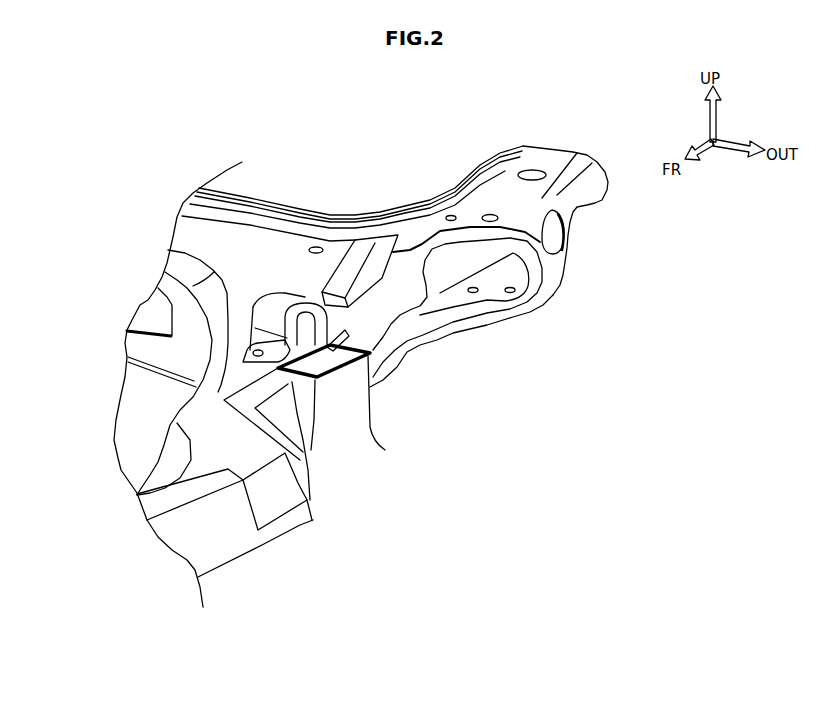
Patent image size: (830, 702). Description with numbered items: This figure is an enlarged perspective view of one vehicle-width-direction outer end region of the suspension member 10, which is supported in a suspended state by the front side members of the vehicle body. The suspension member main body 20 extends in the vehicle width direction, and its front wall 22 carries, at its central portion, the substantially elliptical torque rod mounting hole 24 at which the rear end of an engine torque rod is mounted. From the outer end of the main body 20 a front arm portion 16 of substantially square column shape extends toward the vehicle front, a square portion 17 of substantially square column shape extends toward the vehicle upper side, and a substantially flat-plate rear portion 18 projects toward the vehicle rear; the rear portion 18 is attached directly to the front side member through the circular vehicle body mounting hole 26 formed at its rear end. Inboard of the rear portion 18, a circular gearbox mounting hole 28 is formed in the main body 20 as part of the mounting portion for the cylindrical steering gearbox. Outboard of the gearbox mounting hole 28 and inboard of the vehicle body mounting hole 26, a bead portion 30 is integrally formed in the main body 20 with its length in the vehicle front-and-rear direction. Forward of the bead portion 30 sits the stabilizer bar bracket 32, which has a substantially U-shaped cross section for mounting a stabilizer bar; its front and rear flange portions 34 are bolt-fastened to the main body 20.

The suspension member 10 is at (366, 181).
The front arm portion 16 is at (215, 557).
The square portion 17 is at (357, 417).
The rear portion 18 is at (598, 178).
The suspension member main body 20 is at (407, 352).
The front wall 22 is at (172, 357).
The torque rod mounting hole 24 is at (125, 368).
The vehicle body mounting hole 26 is at (522, 148).
The gearbox mounting hole 28 is at (317, 246).
The bead portion 30 is at (370, 247).
The stabilizer bar bracket 32 is at (279, 296).
The flange portion 34 is at (340, 326).